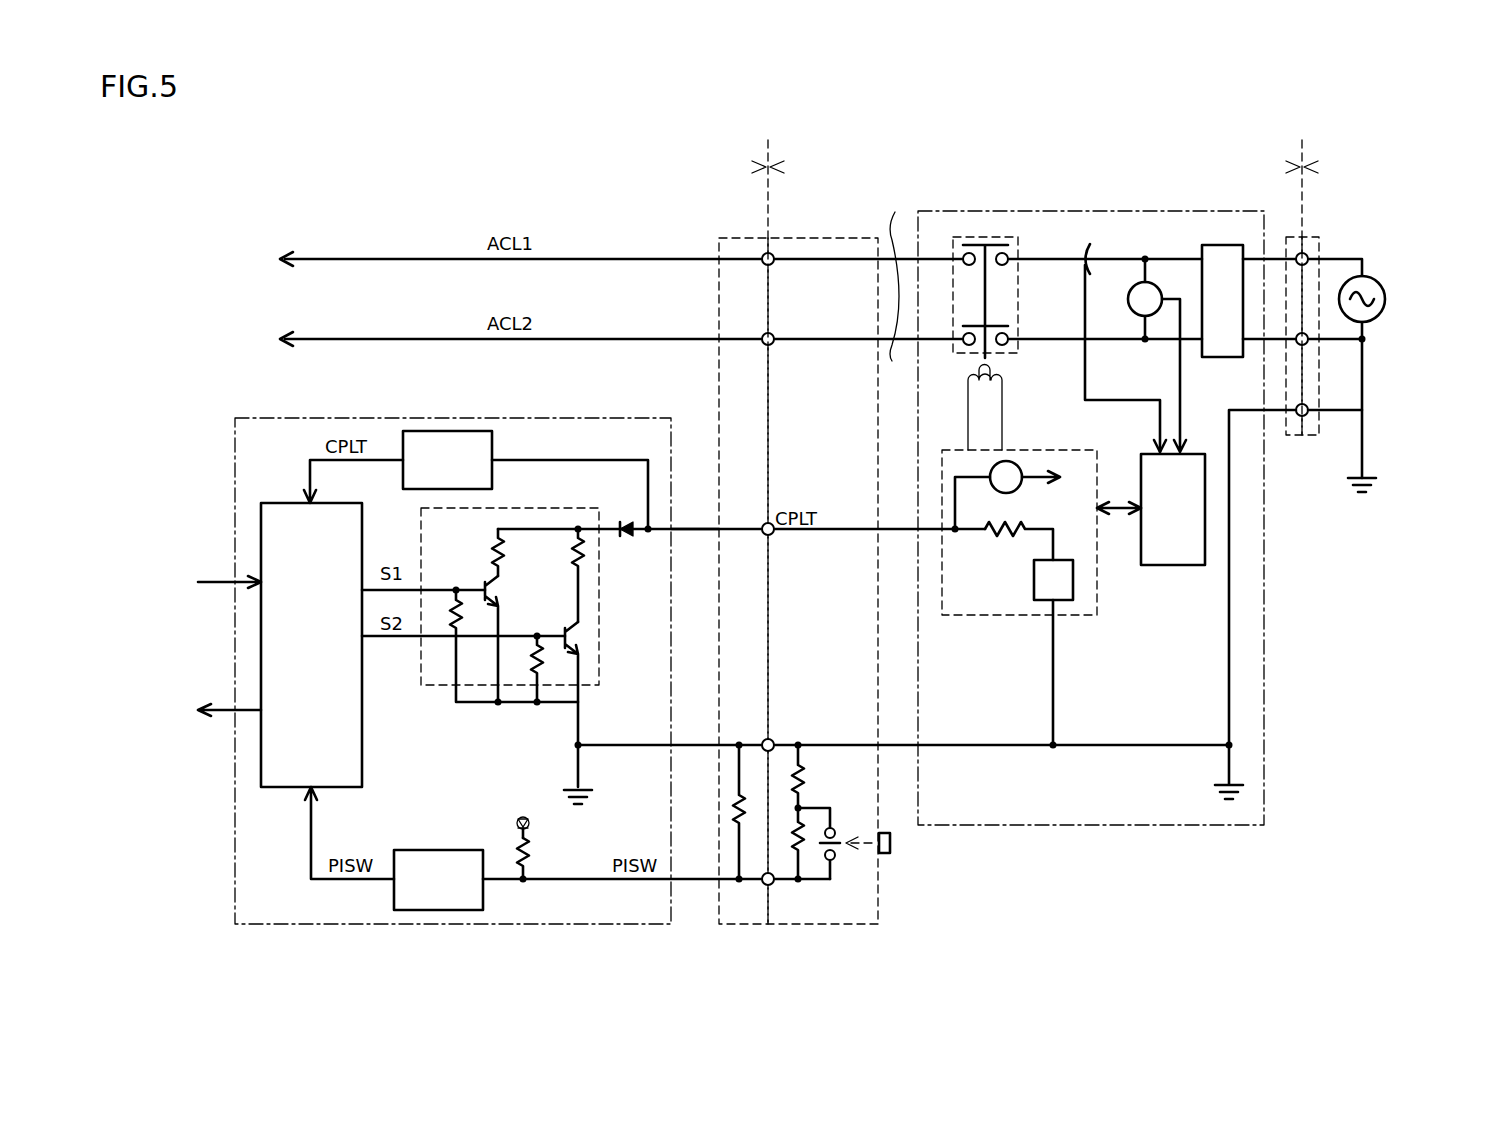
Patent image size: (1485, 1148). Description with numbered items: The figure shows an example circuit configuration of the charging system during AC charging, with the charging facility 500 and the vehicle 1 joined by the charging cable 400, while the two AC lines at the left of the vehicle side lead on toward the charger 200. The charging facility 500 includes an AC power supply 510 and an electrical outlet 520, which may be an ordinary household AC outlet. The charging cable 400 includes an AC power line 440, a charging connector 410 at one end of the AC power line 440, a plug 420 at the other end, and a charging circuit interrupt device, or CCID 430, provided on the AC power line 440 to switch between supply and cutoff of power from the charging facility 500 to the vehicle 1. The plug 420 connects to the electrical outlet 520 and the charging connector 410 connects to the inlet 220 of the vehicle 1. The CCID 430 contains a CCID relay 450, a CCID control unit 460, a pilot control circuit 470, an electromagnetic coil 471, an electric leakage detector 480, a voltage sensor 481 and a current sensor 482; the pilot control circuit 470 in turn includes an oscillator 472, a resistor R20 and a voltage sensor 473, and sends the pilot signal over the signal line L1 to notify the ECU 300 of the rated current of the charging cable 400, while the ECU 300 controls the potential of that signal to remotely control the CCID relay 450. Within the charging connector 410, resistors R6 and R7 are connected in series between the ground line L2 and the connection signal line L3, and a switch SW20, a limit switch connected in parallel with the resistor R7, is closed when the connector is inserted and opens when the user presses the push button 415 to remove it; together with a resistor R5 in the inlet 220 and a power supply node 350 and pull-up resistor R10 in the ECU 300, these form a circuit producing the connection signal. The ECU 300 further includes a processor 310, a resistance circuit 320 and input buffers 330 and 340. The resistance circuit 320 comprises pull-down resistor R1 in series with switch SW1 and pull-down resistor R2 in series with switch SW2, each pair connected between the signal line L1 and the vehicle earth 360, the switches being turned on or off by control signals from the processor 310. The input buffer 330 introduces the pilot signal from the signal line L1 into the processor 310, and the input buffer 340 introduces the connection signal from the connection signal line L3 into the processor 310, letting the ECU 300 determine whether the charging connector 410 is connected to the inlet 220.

The vehicle 1 is at (768, 167).
The charger 200 is at (276, 348).
The inlet 220 is at (748, 238).
The ECU 300 is at (580, 418).
The CPU 310 is at (330, 787).
The resistance circuit 320 is at (532, 508).
The input buffer 330 is at (440, 431).
The input buffer 340 is at (440, 850).
The power supply node 350 is at (523, 817).
The vehicle earth 360 is at (593, 790).
The charging cable 400 is at (1302, 167).
The charging connector 410 is at (790, 238).
The push button 415 is at (885, 832).
The plug 420 is at (1287, 237).
The charging circuit interrupt device (CCID) 430 is at (1178, 211).
The AC power line 440 is at (896, 273).
The CCID relay 450 is at (1011, 240).
The CCID control unit 460 is at (1178, 565).
The CPLT control circuit 470 is at (1028, 450).
The electromagnetic coil 471 is at (1005, 380).
The oscillator 472 is at (1034, 587).
The voltage sensor 473 is at (1015, 491).
The electric leakage detector 480 is at (1225, 357).
The voltage sensor 481 is at (1130, 315).
The current sensor 482 is at (1090, 244).
The charging facility 500 is at (1447, 167).
The AC power supply 510 is at (1380, 280).
The electrical outlet 520 is at (1314, 237).
The pull-down resistor R1 is at (492, 554).
The pull-down resistor R2 is at (572, 554).
The resistor R5 is at (731, 806).
The resistor R6 is at (800, 760).
The resistor R7 is at (800, 876).
The pull-up resistor R10 is at (530, 852).
The resistor R20 is at (1005, 539).
The switch SW1 is at (506, 590).
The switch SW2 is at (585, 640).
The switch SW20 is at (835, 827).
The signal line L1 is at (693, 525).
The ground line L2 is at (693, 743).
The connection signal line L3 is at (693, 877).